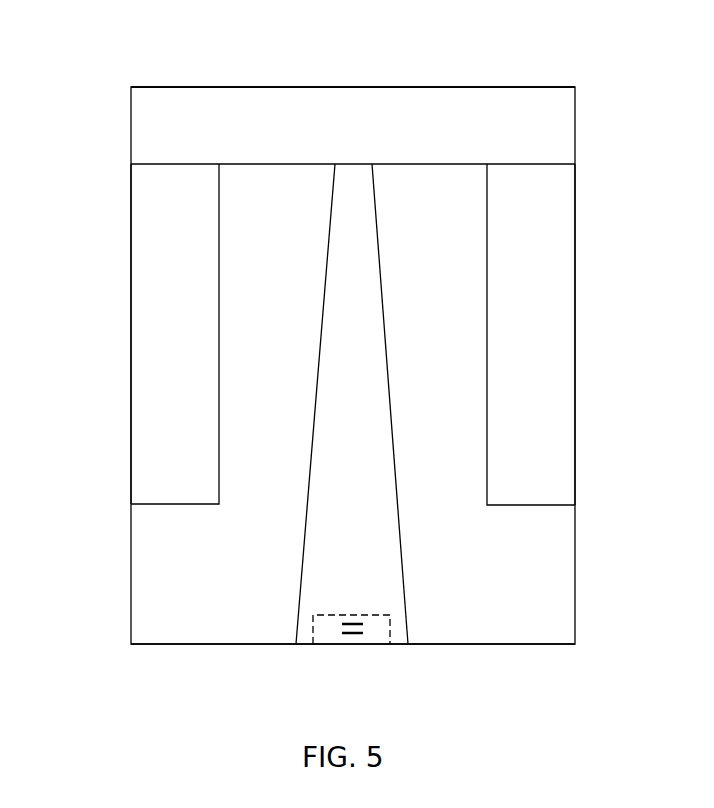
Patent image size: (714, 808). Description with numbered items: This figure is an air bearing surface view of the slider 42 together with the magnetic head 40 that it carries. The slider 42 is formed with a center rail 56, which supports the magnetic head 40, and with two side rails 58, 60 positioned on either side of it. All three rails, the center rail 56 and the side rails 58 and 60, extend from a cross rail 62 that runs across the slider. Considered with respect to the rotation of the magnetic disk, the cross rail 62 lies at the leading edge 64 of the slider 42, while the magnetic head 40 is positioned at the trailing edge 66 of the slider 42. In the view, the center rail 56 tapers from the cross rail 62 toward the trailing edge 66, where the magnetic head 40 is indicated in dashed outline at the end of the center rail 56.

The magnetic head 40 is at (331, 641).
The slider 42 is at (131, 592).
The center rail 56 is at (340, 278).
The side rail 58 is at (148, 244).
The side rail 60 is at (557, 247).
The cross rail 62 is at (274, 98).
The leading edge 64 is at (449, 88).
The trailing edge 66 is at (473, 645).